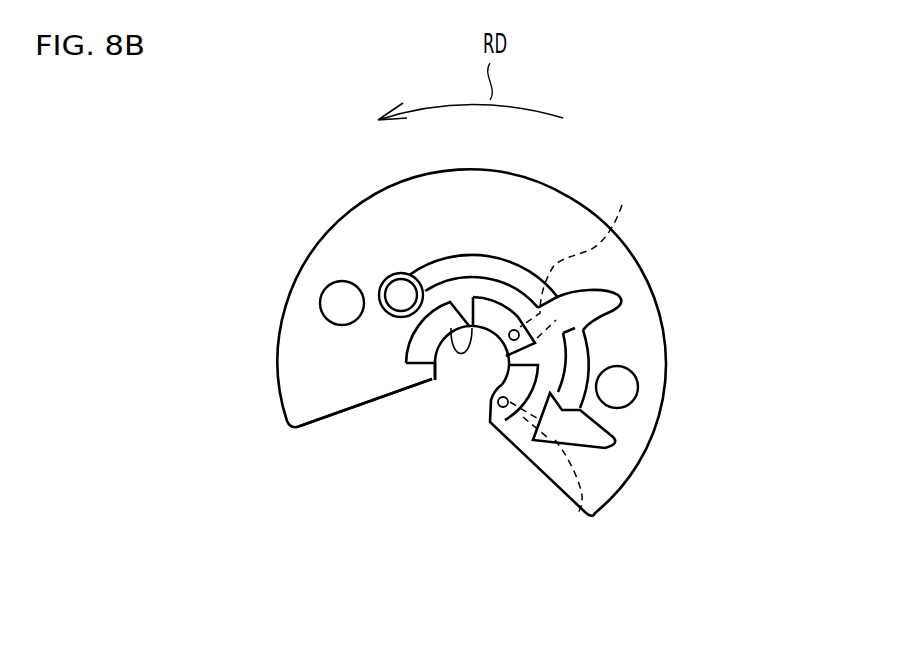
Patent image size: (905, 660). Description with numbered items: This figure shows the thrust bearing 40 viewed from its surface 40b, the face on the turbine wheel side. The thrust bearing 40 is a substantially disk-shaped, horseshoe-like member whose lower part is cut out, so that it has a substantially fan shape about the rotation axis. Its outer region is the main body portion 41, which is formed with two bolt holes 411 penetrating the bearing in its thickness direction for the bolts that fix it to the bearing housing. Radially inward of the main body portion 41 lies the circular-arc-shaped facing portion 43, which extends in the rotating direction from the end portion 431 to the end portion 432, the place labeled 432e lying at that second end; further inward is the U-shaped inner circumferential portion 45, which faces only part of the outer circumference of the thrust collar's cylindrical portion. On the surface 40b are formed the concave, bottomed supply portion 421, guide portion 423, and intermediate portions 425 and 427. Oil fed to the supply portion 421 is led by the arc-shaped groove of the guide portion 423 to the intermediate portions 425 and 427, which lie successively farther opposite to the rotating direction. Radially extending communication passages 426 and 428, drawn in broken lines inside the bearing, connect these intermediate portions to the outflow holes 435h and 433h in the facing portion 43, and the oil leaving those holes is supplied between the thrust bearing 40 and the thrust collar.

The thrust bearing 40 is at (281, 378).
The surface on the turbine wheel side 40b is at (618, 265).
The main body portion 41 is at (648, 330).
The bolt holes 411 is at (328, 300).
The supply portion 421 is at (398, 288).
The guide portion 423 is at (493, 270).
The intermediate portion 425 is at (590, 302).
The communication passage 426 is at (585, 254).
The intermediate portion 427 is at (593, 438).
The communication passage 428 is at (583, 522).
The facing portion 43 is at (400, 378).
The end portion 431 is at (490, 397).
The end portion 432 is at (432, 380).
The end edge of ring portion 432e is at (427, 382).
The outflow hole 433h is at (505, 409).
The outflow hole 435h is at (510, 342).
The inner circumferential portion 45 is at (466, 340).